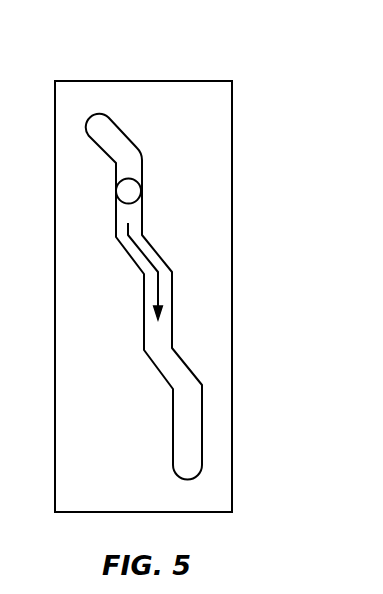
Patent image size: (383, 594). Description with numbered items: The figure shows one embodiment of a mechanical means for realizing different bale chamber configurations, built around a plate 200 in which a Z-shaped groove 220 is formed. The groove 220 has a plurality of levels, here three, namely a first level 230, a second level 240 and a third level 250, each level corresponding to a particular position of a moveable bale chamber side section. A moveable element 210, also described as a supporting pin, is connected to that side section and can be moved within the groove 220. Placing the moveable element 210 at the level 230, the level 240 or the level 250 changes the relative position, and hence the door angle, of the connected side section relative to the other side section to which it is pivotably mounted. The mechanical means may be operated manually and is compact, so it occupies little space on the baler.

The plate 200 is at (196, 41).
The moveable element 210 is at (130, 192).
The groove 220 is at (177, 365).
The first level 230 is at (135, 214).
The second level 240 is at (167, 302).
The third level 250 is at (192, 425).